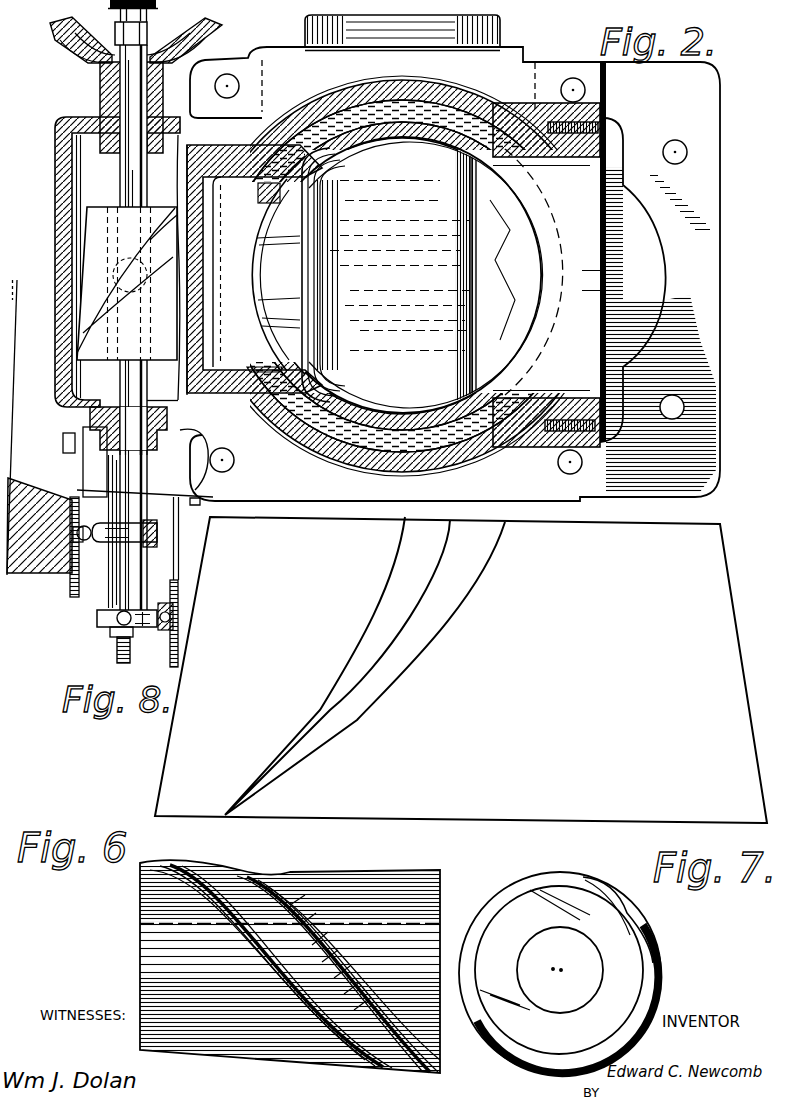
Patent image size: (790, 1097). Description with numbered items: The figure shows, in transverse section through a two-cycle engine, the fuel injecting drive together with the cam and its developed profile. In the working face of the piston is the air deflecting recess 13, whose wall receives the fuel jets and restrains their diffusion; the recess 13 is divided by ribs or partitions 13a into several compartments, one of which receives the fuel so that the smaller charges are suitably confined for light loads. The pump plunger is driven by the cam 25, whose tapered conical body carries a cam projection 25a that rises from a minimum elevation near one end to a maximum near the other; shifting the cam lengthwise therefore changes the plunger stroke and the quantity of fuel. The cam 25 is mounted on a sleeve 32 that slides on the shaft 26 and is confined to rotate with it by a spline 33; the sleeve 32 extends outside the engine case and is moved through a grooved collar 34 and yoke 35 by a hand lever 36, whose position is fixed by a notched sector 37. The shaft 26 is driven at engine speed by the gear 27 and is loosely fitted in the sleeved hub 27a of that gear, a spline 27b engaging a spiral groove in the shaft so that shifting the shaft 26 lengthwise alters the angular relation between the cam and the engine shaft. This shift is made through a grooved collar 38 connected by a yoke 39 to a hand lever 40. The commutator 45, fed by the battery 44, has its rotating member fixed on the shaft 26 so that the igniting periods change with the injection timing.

In FIG. 2, the air deflecting recess 13 is at (287, 293).
In FIG. 2, the ribs or partitions 13a is at (290, 240).
In FIG. 6, the cam 25 is at (143, 957).
In FIG. 7, the cam 25 is at (537, 1038).
In FIG. 8, the cam projection 25a is at (405, 567).
In FIG. 6, the cam projection 25a is at (194, 840).
In FIG. 7, the cam projection 25a is at (627, 900).
In FIG. 2, the shaft 26 is at (143, 560).
In FIG. 2, the gear 27 is at (58, 40).
In FIG. 2, the sleeved hub 27a is at (103, 90).
In FIG. 2, the spline 27b is at (130, 57).
In FIG. 2, the sleeve 32 is at (147, 490).
In FIG. 2, the spline 33 is at (133, 195).
In FIG. 2, the grooved collar 34 is at (140, 525).
In FIG. 2, the yoke 35 is at (82, 547).
In FIG. 2, the hand lever 36 is at (72, 577).
In FIG. 2, the notched sector 37 is at (77, 587).
In FIG. 2, the grooved collar 38 is at (113, 623).
In FIG. 2, the yoke 39 is at (128, 632).
In FIG. 2, the hand lever 40 is at (167, 610).
In FIG. 2, the battery 44 is at (172, 658).
In FIG. 2, the circuit breaker or commutator 45 is at (218, 24).